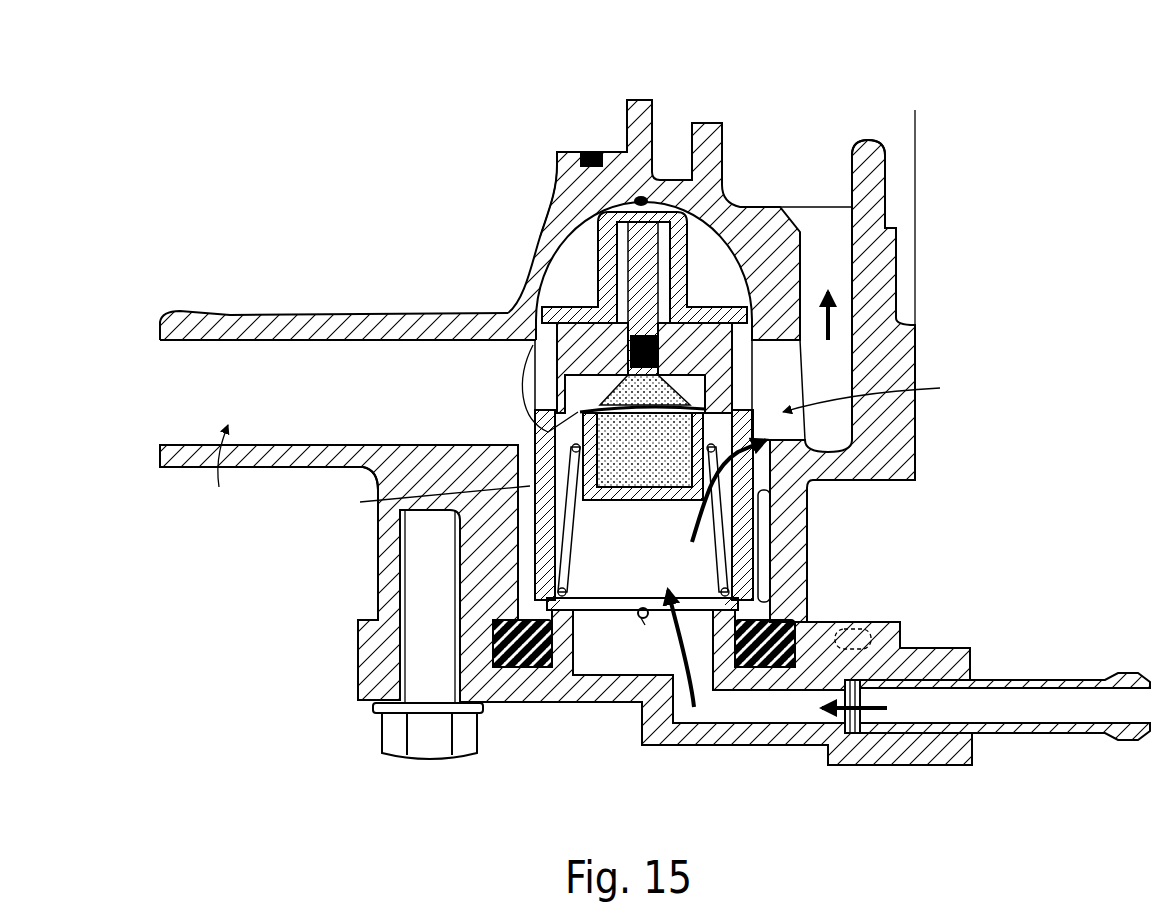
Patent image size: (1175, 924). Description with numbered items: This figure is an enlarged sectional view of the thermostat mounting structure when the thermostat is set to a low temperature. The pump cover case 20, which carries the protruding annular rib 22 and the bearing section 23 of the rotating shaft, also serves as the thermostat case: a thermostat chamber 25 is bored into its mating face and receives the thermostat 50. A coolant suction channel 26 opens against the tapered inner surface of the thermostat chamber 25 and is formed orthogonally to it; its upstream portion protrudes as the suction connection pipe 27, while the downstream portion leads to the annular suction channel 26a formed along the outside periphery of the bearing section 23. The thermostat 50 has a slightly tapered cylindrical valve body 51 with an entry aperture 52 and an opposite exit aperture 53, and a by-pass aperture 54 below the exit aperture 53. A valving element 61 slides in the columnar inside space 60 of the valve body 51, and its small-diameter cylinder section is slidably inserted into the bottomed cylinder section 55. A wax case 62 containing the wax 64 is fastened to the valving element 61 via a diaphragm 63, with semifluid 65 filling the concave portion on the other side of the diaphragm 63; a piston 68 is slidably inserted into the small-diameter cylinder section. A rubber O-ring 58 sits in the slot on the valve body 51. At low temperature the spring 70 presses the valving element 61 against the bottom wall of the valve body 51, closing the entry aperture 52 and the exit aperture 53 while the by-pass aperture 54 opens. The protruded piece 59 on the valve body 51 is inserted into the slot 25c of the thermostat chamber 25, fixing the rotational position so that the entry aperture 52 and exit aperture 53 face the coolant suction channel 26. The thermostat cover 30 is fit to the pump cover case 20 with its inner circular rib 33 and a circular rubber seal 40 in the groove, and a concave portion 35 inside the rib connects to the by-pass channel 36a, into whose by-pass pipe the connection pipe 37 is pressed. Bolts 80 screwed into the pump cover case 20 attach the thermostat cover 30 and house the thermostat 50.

The pump cover case 20 is at (455, 283).
The protruding annular rib 22 is at (640, 100).
The bearing section 23 is at (868, 140).
The thermostat chamber 25 is at (578, 257).
The slot 25c is at (766, 522).
The coolant suction channel 26 is at (231, 518).
The annular suction channel 26a is at (822, 258).
The suction connection pipe 27 is at (245, 315).
The thermostat cover 30 is at (672, 746).
The inner circular rib 33 is at (572, 614).
The concave portion 35 is at (603, 662).
The by-pass channel 36a is at (780, 718).
The connection pipe 37 is at (1068, 740).
The circular rubber seal 40 is at (813, 637).
The thermostat 50 is at (578, 292).
The valve body 51 is at (380, 496).
The entry aperture 52 is at (543, 357).
The exit aperture 53 is at (835, 373).
The by-pass aperture 54 is at (778, 443).
The bottomed cylinder section 55 is at (693, 260).
The rubber O-ring 58 is at (643, 620).
The protruded piece 59 is at (762, 572).
The columnar inside space 60 is at (655, 558).
The valving element 61 is at (550, 378).
The wax case 62 is at (608, 500).
The diaphragm 63 is at (540, 432).
The wax 64 is at (670, 482).
The semifluid 65 is at (745, 359).
The piston 68 is at (712, 200).
The spring 70 is at (713, 556).
The bolt 80 is at (432, 757).